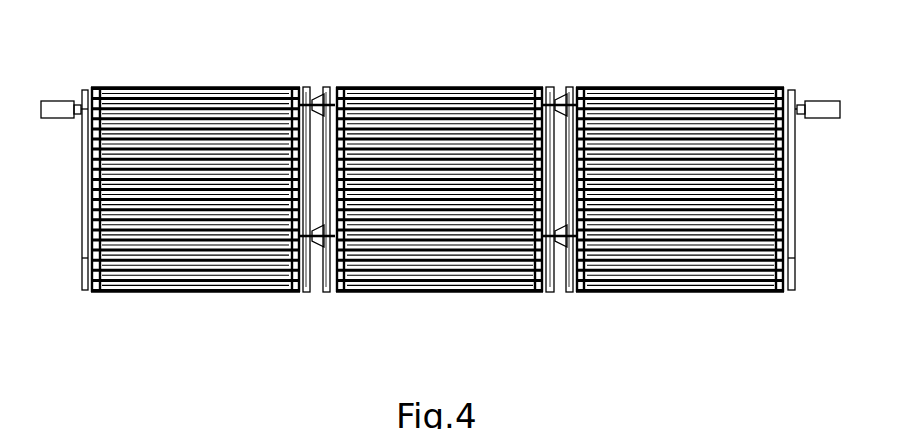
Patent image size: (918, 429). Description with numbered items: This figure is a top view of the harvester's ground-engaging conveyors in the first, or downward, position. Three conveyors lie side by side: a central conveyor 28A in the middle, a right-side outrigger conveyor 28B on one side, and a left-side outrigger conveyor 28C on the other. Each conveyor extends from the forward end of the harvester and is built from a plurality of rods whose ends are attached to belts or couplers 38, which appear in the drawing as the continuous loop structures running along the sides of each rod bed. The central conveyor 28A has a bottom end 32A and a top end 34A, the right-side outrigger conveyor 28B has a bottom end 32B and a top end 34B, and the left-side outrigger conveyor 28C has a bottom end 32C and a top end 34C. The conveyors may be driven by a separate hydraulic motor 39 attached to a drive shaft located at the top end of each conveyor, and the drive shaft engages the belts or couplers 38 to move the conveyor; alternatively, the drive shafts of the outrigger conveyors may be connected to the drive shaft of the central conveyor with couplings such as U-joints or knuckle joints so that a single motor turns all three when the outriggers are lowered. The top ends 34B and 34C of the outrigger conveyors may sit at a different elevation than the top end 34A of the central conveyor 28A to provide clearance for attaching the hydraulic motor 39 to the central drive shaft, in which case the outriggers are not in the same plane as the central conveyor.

The central conveyor 28A is at (420, 287).
The right-side outrigger conveyor 28B is at (180, 287).
The left-side outrigger conveyor 28C is at (678, 287).
The bottom end of central conveyor 32A is at (388, 287).
The bottom end of right-side outrigger conveyor 32B is at (138, 286).
The bottom end of left-side outrigger conveyor 32C is at (637, 285).
The top end of central conveyor 34A is at (420, 79).
The top end of right-side outrigger conveyor 34B is at (171, 79).
The top end of left-side outrigger conveyor 34C is at (672, 79).
The belts or couplers 38 is at (288, 79).
The hydraulic motor 39 is at (49, 92).